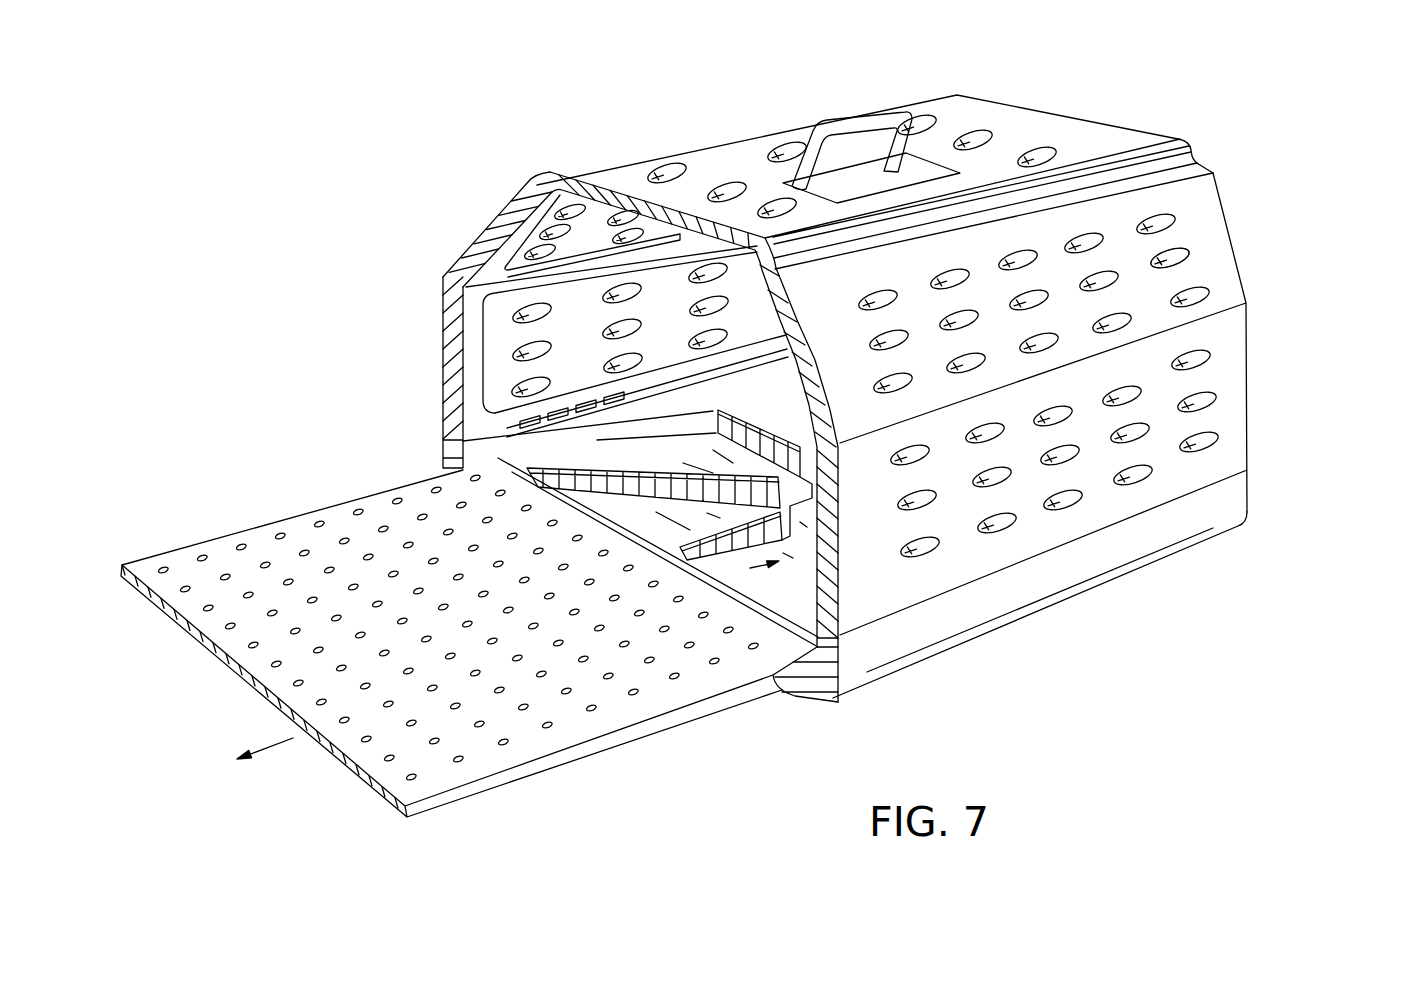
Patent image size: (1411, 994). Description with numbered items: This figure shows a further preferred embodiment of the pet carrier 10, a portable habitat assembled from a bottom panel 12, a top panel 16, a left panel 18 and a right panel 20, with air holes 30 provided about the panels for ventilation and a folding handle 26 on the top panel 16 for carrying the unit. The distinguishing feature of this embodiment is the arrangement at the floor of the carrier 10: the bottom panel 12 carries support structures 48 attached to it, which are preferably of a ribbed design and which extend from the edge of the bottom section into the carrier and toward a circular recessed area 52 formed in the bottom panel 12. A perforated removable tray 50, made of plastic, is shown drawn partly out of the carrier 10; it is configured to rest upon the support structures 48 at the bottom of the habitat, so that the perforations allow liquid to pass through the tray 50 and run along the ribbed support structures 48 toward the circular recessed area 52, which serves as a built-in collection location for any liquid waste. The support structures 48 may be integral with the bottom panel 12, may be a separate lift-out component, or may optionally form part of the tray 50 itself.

The pet carrier 10 is at (1316, 412).
The bottom panel 12 is at (1232, 499).
The top panel 16 is at (1128, 130).
The left panel 18 is at (495, 232).
The right panel 20 is at (1238, 272).
The folding handle 26 is at (897, 122).
The air holes 30 is at (1175, 252).
The support structures 48 is at (612, 482).
The perforated removable tray 50 is at (488, 517).
The circular recessed area 52 is at (840, 533).